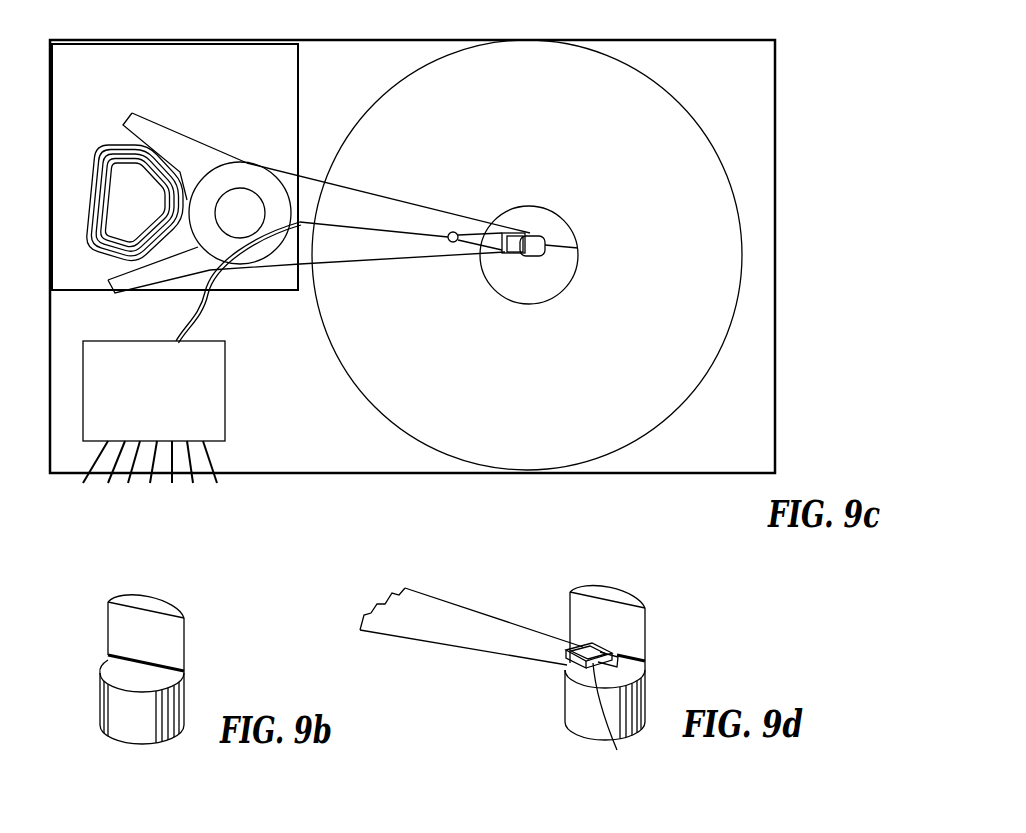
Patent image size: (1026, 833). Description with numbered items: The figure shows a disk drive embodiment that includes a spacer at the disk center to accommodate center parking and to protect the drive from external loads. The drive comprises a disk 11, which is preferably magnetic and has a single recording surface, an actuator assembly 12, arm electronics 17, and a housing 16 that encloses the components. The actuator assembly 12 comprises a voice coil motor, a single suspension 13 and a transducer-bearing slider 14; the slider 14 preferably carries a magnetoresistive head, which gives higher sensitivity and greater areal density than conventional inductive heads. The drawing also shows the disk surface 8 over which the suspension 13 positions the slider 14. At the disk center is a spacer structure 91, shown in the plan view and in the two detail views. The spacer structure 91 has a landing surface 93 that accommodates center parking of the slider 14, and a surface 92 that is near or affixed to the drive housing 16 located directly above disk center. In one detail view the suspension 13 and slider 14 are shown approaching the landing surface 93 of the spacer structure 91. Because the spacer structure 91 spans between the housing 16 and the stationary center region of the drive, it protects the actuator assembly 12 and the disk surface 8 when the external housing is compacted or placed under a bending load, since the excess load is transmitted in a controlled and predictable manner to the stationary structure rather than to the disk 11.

In FIG. 9C, the disk surface 8 is at (537, 140).
In FIG. 9C, the disk 11 is at (690, 116).
In FIG. 9C, the actuator assembly 12 is at (268, 152).
In FIG. 9C, the suspension 13 is at (383, 201).
In FIG. 9D, the suspension 13 is at (478, 616).
In FIG. 9C, the transducer-bearing slider 14 is at (515, 250).
In FIG. 9C, the housing 16 is at (687, 40).
In FIG. 9C, the arm electronics 17 is at (226, 395).
In FIG. 9C, the spacer structure 91 is at (586, 224).
In FIG. 9B, the spacer structure 91 is at (181, 631).
In FIG. 9D, the spacer structure 91 is at (639, 648).
In FIG. 9B, the surface 92 is at (142, 592).
In FIG. 9D, the surface 92 is at (600, 585).
In FIG. 9B, the landing surface 93 is at (112, 665).
In FIG. 9D, the landing surface 93 is at (585, 676).